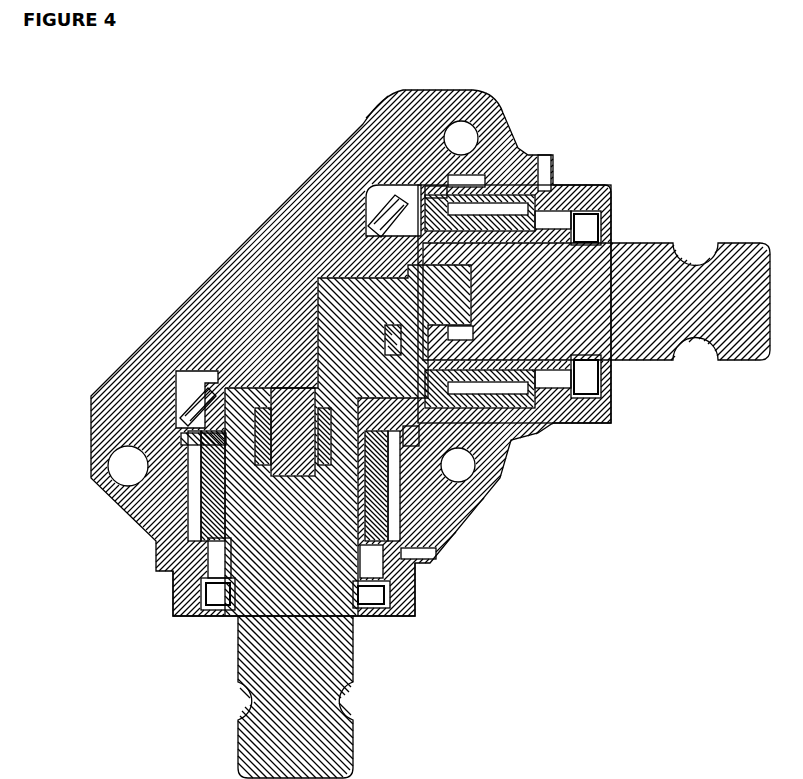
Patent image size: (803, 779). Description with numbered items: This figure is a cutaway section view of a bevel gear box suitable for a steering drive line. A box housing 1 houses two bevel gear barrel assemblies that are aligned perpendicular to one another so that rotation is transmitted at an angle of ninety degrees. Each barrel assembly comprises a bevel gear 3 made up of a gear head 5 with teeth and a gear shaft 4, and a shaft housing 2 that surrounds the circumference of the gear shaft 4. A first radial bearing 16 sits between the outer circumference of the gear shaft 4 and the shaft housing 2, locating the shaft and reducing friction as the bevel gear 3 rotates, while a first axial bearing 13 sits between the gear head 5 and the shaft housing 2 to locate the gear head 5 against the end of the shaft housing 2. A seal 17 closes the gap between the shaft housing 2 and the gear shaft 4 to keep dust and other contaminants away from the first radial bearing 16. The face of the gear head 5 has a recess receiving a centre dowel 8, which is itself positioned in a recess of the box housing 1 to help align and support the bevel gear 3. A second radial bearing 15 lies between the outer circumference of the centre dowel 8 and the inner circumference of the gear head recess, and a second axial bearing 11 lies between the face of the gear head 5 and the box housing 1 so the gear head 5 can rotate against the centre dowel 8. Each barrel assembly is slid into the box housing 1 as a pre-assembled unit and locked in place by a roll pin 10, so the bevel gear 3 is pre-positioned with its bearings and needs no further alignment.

The box housing 1 is at (265, 255).
The shaft housing 2 is at (548, 405).
The bevel gear 3 is at (675, 365).
The gear shaft 4 is at (585, 295).
The gear head 5 is at (402, 212).
The centre dowel 8 is at (345, 290).
The roll pin 10 is at (532, 142).
The second axial bearing 11 is at (382, 262).
The first axial bearing 13 is at (430, 178).
The second radial bearing 15 is at (460, 325).
The first radial bearing 16 is at (485, 185).
The seal 17 is at (590, 213).